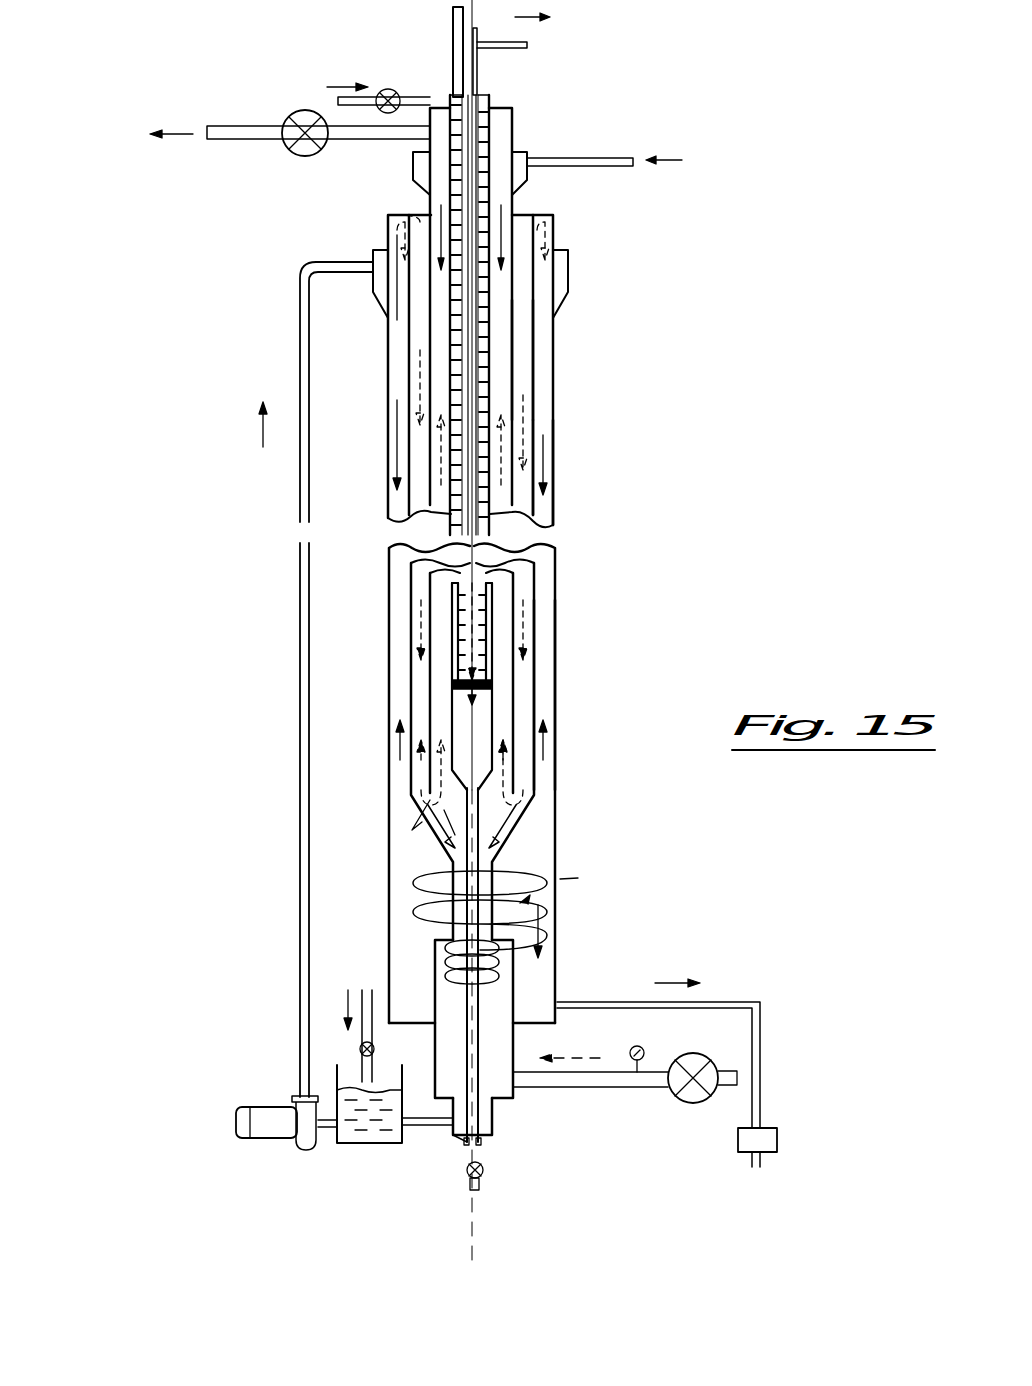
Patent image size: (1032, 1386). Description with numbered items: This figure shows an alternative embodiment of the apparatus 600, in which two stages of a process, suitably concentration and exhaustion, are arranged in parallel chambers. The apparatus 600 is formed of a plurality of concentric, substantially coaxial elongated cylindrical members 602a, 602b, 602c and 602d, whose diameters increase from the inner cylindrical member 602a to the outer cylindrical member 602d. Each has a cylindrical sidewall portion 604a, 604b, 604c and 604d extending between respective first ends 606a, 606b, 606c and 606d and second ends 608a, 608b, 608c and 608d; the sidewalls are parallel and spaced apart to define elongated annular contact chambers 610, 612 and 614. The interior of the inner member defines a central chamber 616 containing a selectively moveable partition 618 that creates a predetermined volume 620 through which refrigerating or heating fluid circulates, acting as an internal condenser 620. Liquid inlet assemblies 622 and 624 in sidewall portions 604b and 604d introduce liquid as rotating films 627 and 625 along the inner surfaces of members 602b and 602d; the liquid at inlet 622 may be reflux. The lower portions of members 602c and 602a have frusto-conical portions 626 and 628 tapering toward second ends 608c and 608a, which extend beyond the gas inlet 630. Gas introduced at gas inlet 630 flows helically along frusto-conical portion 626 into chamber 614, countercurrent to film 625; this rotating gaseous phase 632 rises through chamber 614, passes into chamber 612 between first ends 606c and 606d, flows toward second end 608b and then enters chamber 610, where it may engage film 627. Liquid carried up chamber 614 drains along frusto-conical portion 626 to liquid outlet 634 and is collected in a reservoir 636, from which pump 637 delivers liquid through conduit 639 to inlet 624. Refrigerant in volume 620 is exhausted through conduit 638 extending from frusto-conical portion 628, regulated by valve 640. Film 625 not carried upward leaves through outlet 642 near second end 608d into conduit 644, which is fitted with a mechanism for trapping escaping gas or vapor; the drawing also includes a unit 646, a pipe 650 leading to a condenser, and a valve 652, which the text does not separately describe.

The apparatus 600 is at (702, 277).
The inner cylindrical member 602a is at (442, 659).
The cylindrical member 602b is at (533, 678).
The cylindrical member 602c is at (550, 703).
The outer cylindrical member 602d is at (559, 720).
The cylindrical sidewall portion 604a is at (451, 350).
The cylindrical sidewall portion 604b is at (535, 585).
The cylindrical sidewall portion 604c is at (537, 607).
The cylindrical sidewall portion 604d is at (555, 633).
The first end 606a is at (488, 95).
The first end 606b is at (512, 110).
The first end 606c is at (538, 237).
The first end 606d is at (545, 215).
The second end 608a is at (467, 1145).
The second end 608b is at (545, 755).
The second end 608c is at (494, 1133).
The second end 608d is at (540, 1025).
The annular contact chamber 610 is at (505, 395).
The annular contact chamber 612 is at (518, 360).
The annular contact chamber 614 is at (560, 500).
The central chamber 616 is at (530, 478).
The selectively moveable partition 618 is at (455, 690).
The predetermined volume 620 is at (491, 323).
The liquid inlet assembly 622 is at (534, 143).
The liquid inlet assembly 624 is at (366, 248).
The rotating film 625 is at (397, 470).
The frusto-conical portion 626 is at (560, 845).
The rotating film 627 is at (500, 225).
The frusto-conical portion 628 is at (427, 843).
The gas inlet 630 is at (433, 1040).
The rotating gaseous phase 632 is at (413, 893).
The liquid outlet 634 is at (452, 1132).
The reservoir 636 is at (357, 1150).
The pump 637 is at (270, 1108).
The conduit 638 is at (548, 878).
The conduit 639 is at (298, 583).
The valve 640 is at (484, 1172).
The liquid outlet 642 is at (560, 1000).
The conduit 644 is at (740, 1000).
The unit 646 is at (778, 1128).
The pipe to condenser 650 is at (417, 135).
The valve 652 is at (297, 110).